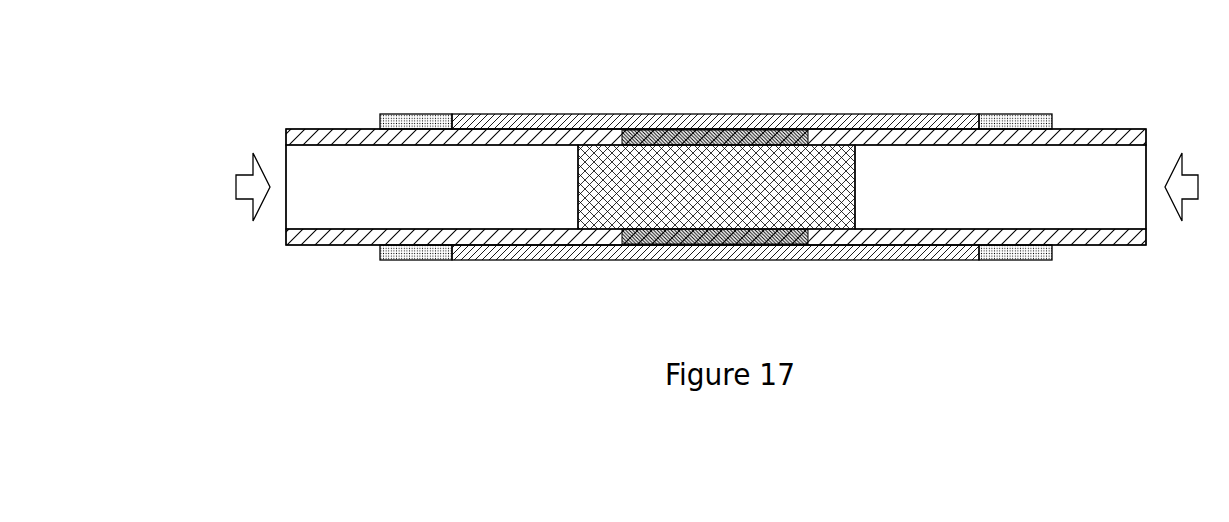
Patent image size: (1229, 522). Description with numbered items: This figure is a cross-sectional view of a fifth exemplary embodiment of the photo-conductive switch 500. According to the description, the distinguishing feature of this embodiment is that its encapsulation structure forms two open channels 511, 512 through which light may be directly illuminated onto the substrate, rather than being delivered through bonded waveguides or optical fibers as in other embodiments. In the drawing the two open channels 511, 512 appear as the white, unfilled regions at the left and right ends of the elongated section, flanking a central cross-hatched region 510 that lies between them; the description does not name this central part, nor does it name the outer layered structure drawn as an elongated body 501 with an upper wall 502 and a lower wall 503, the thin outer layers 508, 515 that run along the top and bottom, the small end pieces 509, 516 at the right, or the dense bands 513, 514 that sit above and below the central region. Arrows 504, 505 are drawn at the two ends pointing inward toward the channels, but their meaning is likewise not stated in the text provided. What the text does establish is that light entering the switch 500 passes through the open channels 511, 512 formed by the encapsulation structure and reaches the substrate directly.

The photo-conductive switch 500 is at (716, 178).
The tubular body 501 is at (717, 188).
The first tube wall 502 is at (337, 129).
The second tube wall 503 is at (355, 246).
The compression force (right) 504 is at (1147, 213).
The compression force (left) 505 is at (283, 218).
The outer sleeve (top) 508 is at (675, 114).
The end ring (top right) 509 is at (1018, 114).
The compressible filler / foam section 510 is at (733, 198).
The open channel 511 is at (433, 199).
The open channel 512 is at (1008, 199).
The upper reinforcement band 513 is at (735, 131).
The lower reinforcement band 514 is at (731, 244).
The outer sleeve (bottom) 515 is at (677, 261).
The end ring (bottom right) 516 is at (1022, 261).